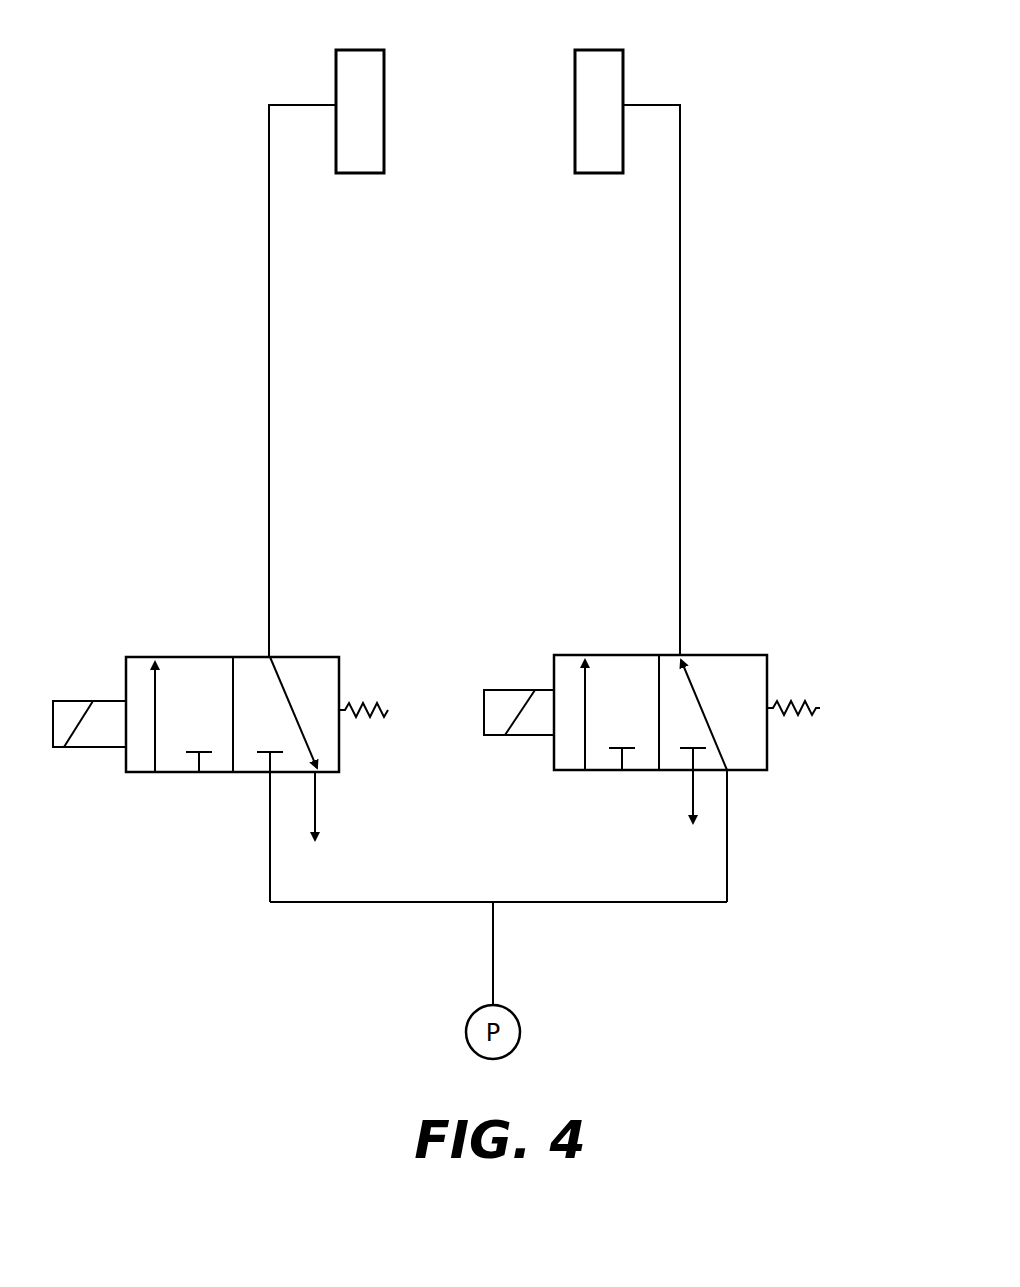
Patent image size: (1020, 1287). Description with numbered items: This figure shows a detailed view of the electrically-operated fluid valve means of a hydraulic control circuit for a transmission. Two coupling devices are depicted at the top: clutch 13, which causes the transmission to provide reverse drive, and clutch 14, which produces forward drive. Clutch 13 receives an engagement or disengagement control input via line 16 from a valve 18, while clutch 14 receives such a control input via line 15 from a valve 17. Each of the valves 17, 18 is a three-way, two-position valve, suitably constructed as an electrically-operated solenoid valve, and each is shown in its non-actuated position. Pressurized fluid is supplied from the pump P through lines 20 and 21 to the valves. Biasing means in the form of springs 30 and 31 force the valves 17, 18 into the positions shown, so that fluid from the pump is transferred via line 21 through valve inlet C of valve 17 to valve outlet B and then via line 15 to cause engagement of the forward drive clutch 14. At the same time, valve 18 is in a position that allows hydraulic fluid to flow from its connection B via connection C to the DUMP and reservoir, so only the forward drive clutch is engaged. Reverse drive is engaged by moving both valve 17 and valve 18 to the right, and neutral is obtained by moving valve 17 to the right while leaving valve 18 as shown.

The coupling device 13 is at (348, 77).
The coupling device 14 is at (609, 82).
The line 15 is at (680, 283).
The line 16 is at (269, 345).
The valve 17 is at (698, 606).
The valve 18 is at (192, 606).
The line 20 is at (313, 902).
The line 21 is at (573, 902).
The spring 30 is at (820, 705).
The spring 31 is at (388, 709).